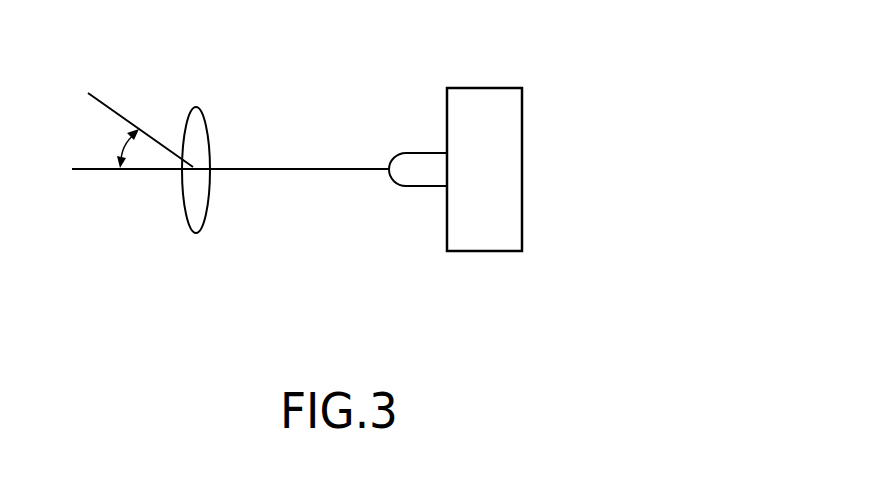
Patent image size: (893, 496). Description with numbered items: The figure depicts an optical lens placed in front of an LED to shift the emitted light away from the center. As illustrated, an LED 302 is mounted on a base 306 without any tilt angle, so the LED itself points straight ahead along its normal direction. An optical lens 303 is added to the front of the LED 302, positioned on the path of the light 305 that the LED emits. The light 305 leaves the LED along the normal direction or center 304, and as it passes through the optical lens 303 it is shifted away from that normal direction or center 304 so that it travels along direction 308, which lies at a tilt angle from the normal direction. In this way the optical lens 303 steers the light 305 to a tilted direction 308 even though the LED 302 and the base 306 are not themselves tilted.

The LED 302 is at (402, 162).
The optical lens 303 is at (197, 108).
The normal direction or center 304 is at (100, 170).
The light 305 is at (295, 169).
The base 306 is at (513, 108).
The direction 308 is at (118, 118).